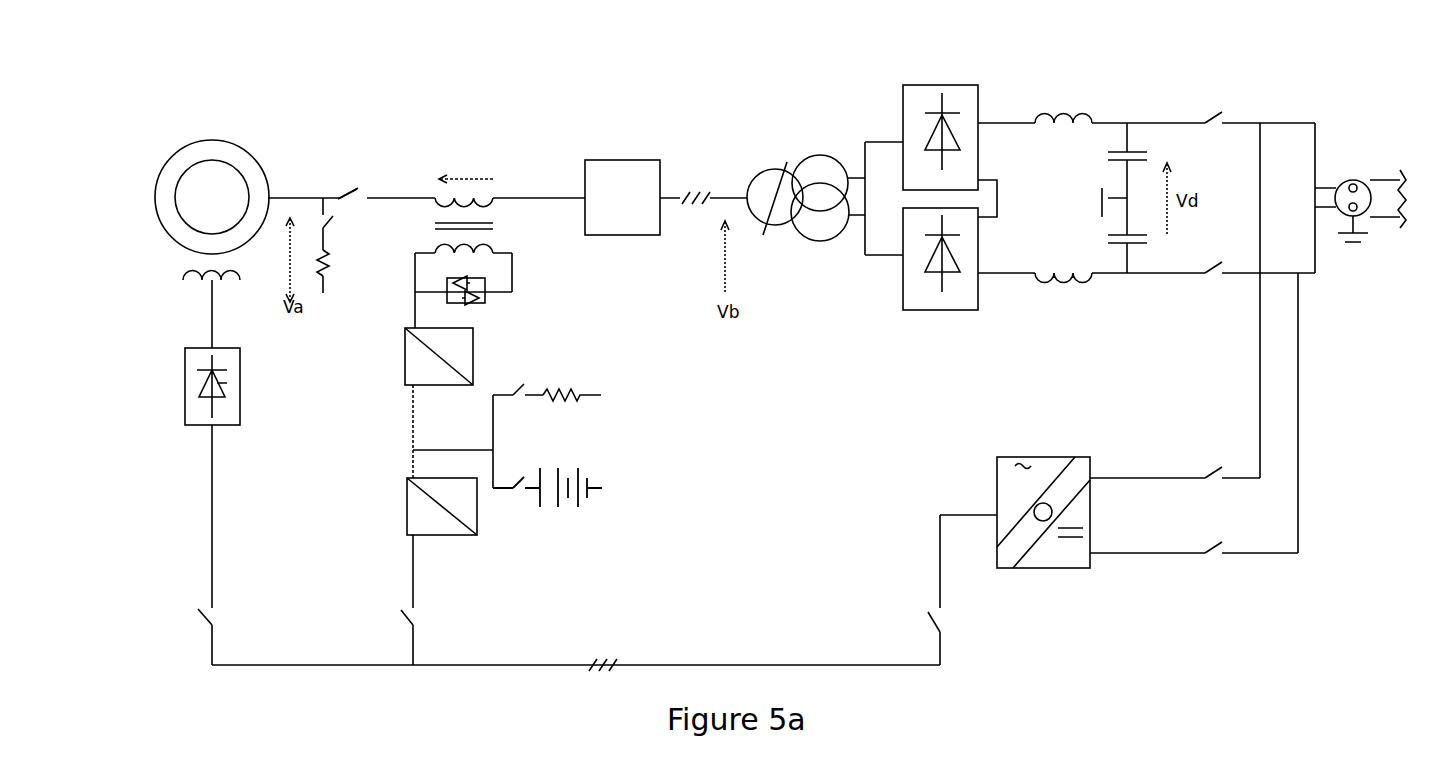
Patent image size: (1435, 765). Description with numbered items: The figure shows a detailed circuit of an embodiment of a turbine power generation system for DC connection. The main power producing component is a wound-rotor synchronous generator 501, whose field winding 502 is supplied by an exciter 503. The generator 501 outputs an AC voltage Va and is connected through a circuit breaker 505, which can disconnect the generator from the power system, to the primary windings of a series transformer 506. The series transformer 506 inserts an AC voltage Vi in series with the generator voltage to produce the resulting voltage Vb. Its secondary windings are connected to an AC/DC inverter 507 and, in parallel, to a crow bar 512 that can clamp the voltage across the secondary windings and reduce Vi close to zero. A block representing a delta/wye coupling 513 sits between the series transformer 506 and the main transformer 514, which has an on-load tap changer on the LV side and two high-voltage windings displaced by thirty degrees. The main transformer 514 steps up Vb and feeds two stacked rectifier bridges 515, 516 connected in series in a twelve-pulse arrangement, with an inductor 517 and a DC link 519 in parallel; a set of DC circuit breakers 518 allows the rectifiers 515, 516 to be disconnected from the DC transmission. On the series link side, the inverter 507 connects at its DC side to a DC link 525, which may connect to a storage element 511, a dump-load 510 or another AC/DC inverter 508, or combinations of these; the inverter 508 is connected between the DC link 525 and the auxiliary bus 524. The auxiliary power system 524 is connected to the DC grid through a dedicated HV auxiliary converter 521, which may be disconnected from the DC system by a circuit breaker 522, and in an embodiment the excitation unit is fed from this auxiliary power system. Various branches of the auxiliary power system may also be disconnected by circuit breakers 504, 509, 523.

The wound-rotor synchronous generator 501 is at (213, 130).
The field winding 502 is at (200, 292).
The exciter 503 is at (195, 432).
The circuit breaker 504 is at (190, 608).
The circuit breaker 505 is at (350, 183).
The series transformer 506 is at (437, 158).
The AC/DC inverter 507 is at (400, 352).
The AC/DC inverter 508 is at (400, 522).
The circuit breaker 509 is at (430, 616).
The dump-load 510 is at (602, 395).
The storage element 511 is at (598, 496).
The crow bar 512 is at (502, 306).
The delta/wye coupling 513 is at (622, 157).
The main transformer 514 is at (785, 150).
The rectifier bridge 515 is at (960, 80).
The rectifier bridge 516 is at (930, 318).
The inductor 517 is at (1065, 100).
The DC circuit breaker 518 is at (1210, 110).
The DC link 519 is at (1108, 178).
The auxiliary converter 521 is at (1052, 452).
The circuit breaker 522 is at (1210, 460).
The circuit breaker 523 is at (920, 612).
The auxiliary bus 524 is at (657, 655).
The DC link 525 is at (400, 412).